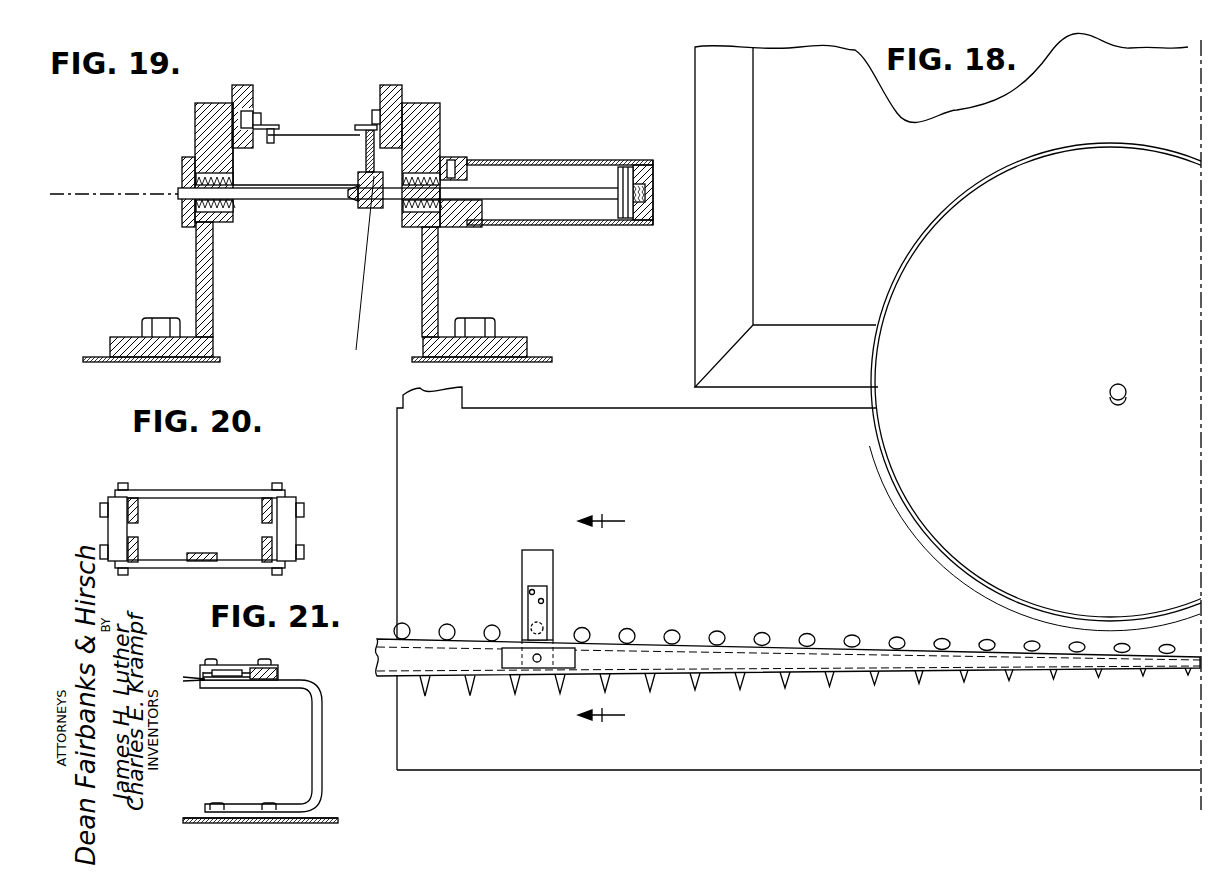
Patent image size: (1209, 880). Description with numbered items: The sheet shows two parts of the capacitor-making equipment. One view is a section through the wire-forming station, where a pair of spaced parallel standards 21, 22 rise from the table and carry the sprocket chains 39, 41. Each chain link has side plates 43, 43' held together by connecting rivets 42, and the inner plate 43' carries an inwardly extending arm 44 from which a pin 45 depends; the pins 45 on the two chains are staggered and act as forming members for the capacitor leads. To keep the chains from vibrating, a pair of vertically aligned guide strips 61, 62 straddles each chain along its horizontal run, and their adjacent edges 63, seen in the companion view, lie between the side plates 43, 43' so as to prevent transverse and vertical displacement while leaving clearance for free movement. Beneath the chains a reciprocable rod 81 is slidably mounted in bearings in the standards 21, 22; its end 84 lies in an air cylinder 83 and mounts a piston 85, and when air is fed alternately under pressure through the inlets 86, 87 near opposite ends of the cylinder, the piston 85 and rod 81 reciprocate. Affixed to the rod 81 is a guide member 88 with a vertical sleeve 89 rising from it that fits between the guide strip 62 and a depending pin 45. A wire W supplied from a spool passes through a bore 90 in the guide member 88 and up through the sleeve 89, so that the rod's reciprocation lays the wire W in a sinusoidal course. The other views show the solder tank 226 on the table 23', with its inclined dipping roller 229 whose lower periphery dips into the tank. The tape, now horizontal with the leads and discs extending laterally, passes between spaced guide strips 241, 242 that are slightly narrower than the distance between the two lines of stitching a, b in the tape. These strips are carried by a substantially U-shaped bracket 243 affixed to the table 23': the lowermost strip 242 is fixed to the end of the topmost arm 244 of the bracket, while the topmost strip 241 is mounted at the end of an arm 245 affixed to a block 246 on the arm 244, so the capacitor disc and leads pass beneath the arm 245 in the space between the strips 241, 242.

In FIG. 19, the standard 21 is at (196, 268).
In FIG. 18, the standard 21 is at (601, 619).
In FIG. 19, the standard 22 is at (438, 268).
In FIG. 19, the sprocket chain 39 is at (268, 124).
In FIG. 19, the sprocket chain 41 is at (373, 116).
In FIG. 19, the connecting rivet 42 is at (226, 120).
In FIG. 19, the side plate 43 is at (184, 131).
In FIG. 19, the inner side plate 43' is at (274, 87).
In FIG. 19, the arm 44 is at (264, 126).
In FIG. 19, the pin 45 is at (275, 141).
In FIG. 19, the guide strip 61 is at (243, 96).
In FIG. 20, the guide strip 61 is at (138, 510).
In FIG. 19, the guide strip 62 is at (250, 148).
In FIG. 20, the guide strip 62 is at (140, 555).
In FIG. 20, the adjacent edge 63 is at (140, 542).
In FIG. 19, the reciprocable rod 81 is at (262, 203).
In FIG. 19, the air cylinder 83 is at (552, 238).
In FIG. 19, the end of rod 84 is at (556, 186).
In FIG. 19, the piston 85 is at (626, 220).
In FIG. 19, the air inlet 86 is at (458, 166).
In FIG. 19, the air inlet 87 is at (650, 190).
In FIG. 19, the guide member 88 is at (352, 204).
In FIG. 19, the vertical sleeve 89 is at (366, 158).
In FIG. 19, the bore 90 is at (360, 197).
In FIG. 19, the wire W is at (356, 292).
In FIG. 18, the solder tank 226 is at (684, 309).
In FIG. 18, the dipping roller 229 is at (890, 448).
In FIG. 21, the table 23' is at (270, 795).
In FIG. 18, the table 23' is at (798, 600).
In FIG. 21, the guide strip 241 is at (205, 676).
In FIG. 18, the guide strip 241 is at (560, 672).
In FIG. 21, the guide strip 242 is at (195, 684).
In FIG. 21, the U-shaped bracket 243 is at (312, 750).
In FIG. 21, the arm 244 is at (248, 688).
In FIG. 18, the arm 244 is at (521, 562).
In FIG. 21, the arm 245 is at (240, 668).
In FIG. 18, the arm 245 is at (528, 614).
In FIG. 21, the block 246 is at (279, 676).
In FIG. 18, the line of stitching a is at (693, 640).
In FIG. 18, the line of stitching b is at (702, 684).